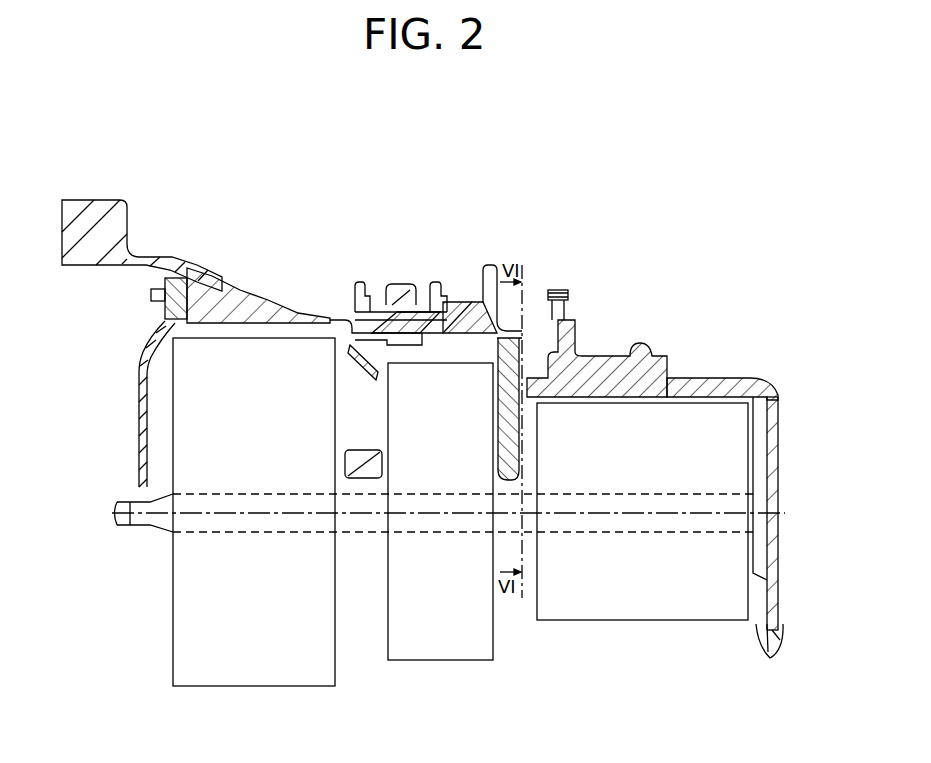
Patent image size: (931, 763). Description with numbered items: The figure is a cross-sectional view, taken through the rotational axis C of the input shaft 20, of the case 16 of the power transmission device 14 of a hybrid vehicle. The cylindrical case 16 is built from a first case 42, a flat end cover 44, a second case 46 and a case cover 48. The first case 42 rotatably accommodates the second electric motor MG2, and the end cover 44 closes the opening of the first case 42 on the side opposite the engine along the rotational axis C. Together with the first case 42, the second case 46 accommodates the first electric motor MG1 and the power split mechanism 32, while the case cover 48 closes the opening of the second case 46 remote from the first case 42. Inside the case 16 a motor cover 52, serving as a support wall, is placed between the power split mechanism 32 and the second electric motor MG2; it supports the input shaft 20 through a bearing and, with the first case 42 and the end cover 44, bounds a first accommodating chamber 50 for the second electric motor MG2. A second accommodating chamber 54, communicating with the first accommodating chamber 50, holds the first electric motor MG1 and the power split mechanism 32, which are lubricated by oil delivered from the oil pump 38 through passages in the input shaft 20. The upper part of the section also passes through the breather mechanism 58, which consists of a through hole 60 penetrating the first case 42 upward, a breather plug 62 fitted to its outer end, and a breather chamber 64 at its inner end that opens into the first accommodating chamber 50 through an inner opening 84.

The power transmission device 14 is at (682, 181).
The case 16 is at (209, 240).
The input shaft 20 is at (363, 522).
The power split mechanism 32 is at (437, 645).
The oil pump 38 is at (760, 458).
The first case 42 is at (690, 382).
The end cover 44 is at (780, 656).
The second case 46 is at (240, 294).
The case cover 48 is at (139, 379).
The first accommodating chamber 50 is at (650, 378).
The motor cover 52 is at (483, 306).
The second accommodating chamber 54 is at (349, 385).
The breather mechanism 58 is at (580, 276).
The through hole 60 is at (552, 342).
The breather plug 62 is at (557, 345).
The breather chamber 64 is at (546, 362).
The inner opening 84 is at (527, 388).
The rotational axis C is at (128, 497).
The first electric motor MG1 is at (247, 660).
The second electric motor MG2 is at (600, 615).